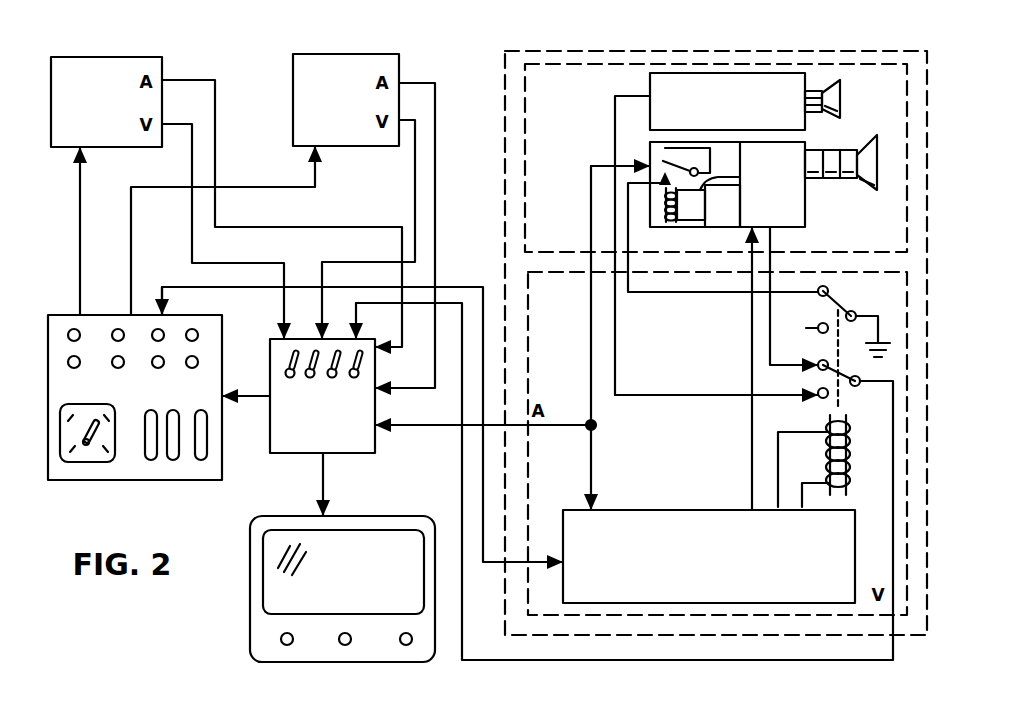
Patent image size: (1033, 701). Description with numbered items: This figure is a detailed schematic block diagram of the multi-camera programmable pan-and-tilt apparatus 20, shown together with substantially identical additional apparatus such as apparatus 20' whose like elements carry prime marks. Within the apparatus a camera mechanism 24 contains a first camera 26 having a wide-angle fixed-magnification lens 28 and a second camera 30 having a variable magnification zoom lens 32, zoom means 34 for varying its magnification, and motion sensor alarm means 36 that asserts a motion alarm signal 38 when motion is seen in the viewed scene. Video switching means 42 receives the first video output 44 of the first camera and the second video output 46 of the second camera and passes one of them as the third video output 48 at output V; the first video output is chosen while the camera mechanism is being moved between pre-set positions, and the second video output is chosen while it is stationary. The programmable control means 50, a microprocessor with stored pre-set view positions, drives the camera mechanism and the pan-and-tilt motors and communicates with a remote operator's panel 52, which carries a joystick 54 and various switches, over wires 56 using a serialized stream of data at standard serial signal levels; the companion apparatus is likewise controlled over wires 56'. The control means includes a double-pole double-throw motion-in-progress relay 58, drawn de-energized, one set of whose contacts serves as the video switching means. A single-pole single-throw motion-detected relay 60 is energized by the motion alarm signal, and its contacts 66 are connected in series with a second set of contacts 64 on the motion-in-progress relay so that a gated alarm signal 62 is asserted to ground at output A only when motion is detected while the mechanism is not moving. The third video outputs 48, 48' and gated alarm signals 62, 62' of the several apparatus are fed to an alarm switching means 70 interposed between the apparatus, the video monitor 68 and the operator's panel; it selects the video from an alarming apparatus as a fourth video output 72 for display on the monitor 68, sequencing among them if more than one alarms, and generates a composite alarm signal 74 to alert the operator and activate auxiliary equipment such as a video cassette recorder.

The multi-camera programmable pan-and-tilt apparatus 20 is at (716, 322).
The additional multi-camera programmable pan-and-tilt apparatus 20' is at (346, 84).
The camera mechanism 24 is at (750, 64).
The first camera 26 is at (778, 80).
The wide-angle fixed-magnification lens 28 is at (840, 97).
The second camera 30 is at (805, 222).
The variable magnification zoom lens 32 is at (858, 165).
The zoom means 34 is at (823, 156).
The motion sensor alarm means 36 is at (725, 214).
The motion alarm signal 38 is at (740, 177).
The video switching means 42 is at (815, 405).
The first video output 44 is at (613, 114).
The second video output 46 is at (770, 312).
The third video output 48 is at (632, 494).
The third video output 48' is at (368, 229).
The programmable control means 50 is at (683, 510).
The remote operator's panel 52 is at (160, 480).
The joystick 54 is at (115, 436).
The wires 56 is at (362, 400).
The wires 56' is at (238, 230).
The motion-in-progress relay 58 is at (865, 490).
The motion-detected relay 60 is at (664, 226).
The gated alarm signal 62 is at (570, 337).
The gated alarm signal 62' is at (413, 216).
The second set of contacts 64 is at (848, 302).
The contacts 66 is at (612, 168).
The video monitor 68 is at (250, 636).
The alarm switching means 70 is at (358, 452).
The fourth video output 72 is at (326, 485).
The composite alarm signal 74 is at (256, 397).